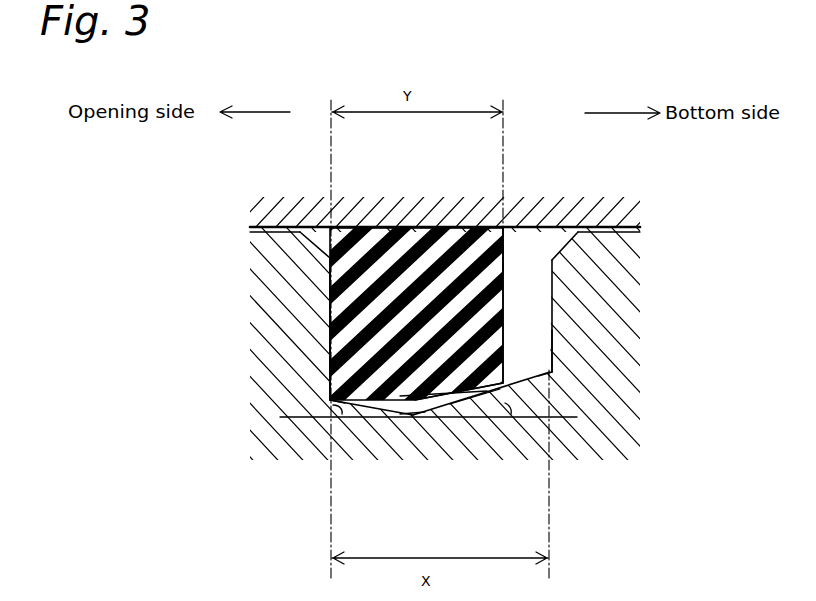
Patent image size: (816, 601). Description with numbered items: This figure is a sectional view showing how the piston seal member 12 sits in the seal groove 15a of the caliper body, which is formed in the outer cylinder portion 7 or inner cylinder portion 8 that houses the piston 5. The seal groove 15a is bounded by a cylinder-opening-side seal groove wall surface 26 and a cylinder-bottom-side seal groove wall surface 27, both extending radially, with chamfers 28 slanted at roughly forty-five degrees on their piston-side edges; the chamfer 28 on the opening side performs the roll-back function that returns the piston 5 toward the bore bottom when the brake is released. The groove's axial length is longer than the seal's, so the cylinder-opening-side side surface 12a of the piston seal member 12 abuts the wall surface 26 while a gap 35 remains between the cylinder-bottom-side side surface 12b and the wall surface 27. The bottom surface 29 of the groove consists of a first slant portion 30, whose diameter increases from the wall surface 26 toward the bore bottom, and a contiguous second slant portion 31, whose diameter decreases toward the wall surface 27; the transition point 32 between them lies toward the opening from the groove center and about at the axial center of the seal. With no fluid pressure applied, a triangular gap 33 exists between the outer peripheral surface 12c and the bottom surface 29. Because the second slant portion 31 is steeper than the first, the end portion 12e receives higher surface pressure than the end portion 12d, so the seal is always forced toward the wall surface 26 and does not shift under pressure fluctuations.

The piston 5 is at (462, 169).
The outer cylinder portion 7 is at (597, 285).
The inner cylinder portion 8 is at (490, 262).
The piston seal member 12 is at (388, 262).
The cylinder-opening-side side surface 12a is at (328, 283).
The cylinder-bottom-side side surface 12b is at (553, 283).
The outer peripheral surface 12c is at (486, 398).
The end portion 12d is at (328, 409).
The end portion 12e is at (532, 398).
The seal groove 15a is at (536, 250).
The cylinder-opening-side seal groove wall surface 26 is at (330, 316).
The cylinder-bottom-side seal groove wall surface 27 is at (555, 330).
The chamfers 28 is at (318, 237).
The bottom surface 29 is at (415, 415).
The first slant portion 30 is at (395, 413).
The second slant portion 31 is at (549, 380).
The transition point 32 is at (415, 417).
The gap 33 is at (480, 410).
The gap 35 is at (553, 355).